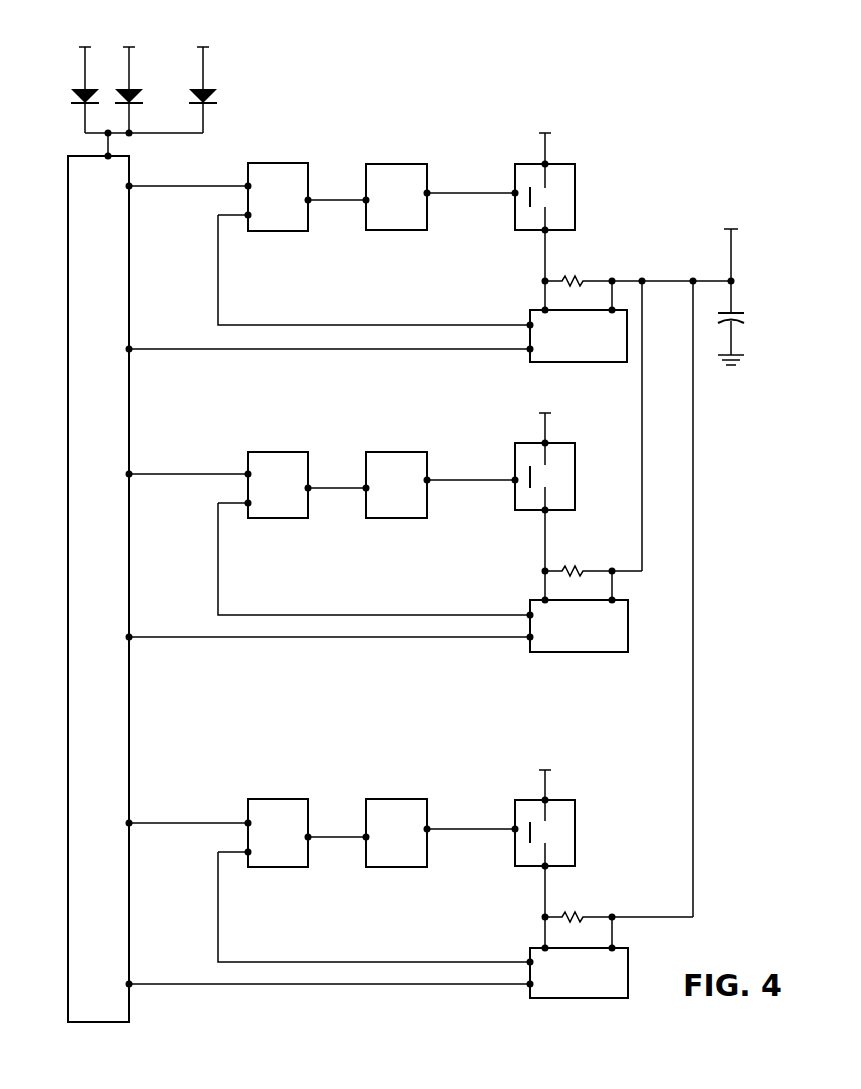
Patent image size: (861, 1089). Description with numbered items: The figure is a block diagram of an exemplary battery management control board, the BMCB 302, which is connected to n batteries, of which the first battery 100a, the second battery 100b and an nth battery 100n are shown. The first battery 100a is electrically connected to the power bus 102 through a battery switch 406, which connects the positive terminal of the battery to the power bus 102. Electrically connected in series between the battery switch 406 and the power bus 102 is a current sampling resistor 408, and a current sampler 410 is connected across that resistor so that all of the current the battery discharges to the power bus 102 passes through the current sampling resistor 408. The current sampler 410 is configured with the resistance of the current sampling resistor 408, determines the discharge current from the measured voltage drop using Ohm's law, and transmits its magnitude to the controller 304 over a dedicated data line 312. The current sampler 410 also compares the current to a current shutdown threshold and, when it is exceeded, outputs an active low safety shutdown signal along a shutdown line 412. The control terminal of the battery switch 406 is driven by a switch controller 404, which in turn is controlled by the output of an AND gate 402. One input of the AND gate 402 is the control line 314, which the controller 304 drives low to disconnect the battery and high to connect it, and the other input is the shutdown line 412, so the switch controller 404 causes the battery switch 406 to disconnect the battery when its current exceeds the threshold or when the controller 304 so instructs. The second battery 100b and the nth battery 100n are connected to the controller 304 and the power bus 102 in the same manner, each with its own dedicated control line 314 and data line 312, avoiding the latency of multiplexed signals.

The BMCB 302 is at (613, 110).
The controller 304 is at (98, 589).
The first battery 100a is at (80, 38).
The second battery 100b is at (124, 38).
The nth battery 100n is at (197, 38).
The power bus 102 is at (731, 216).
The data line 312 is at (205, 350).
The control line 314 is at (205, 187).
The AND gate 402 is at (294, 515).
The switch controller 404 is at (442, 515).
The battery switch 406 is at (575, 218).
The current sampling resistor 408 is at (578, 280).
The current sampler 410 is at (578, 653).
The shutdown line 412 is at (340, 325).